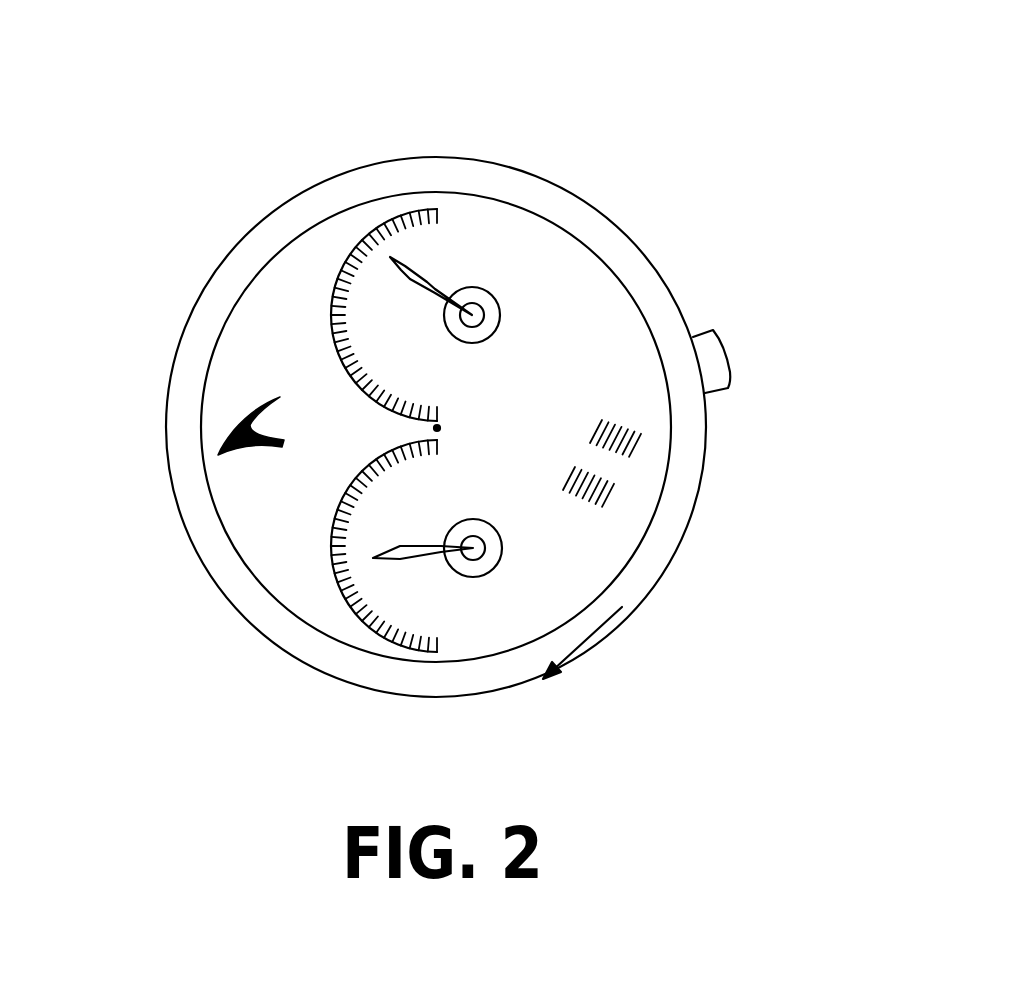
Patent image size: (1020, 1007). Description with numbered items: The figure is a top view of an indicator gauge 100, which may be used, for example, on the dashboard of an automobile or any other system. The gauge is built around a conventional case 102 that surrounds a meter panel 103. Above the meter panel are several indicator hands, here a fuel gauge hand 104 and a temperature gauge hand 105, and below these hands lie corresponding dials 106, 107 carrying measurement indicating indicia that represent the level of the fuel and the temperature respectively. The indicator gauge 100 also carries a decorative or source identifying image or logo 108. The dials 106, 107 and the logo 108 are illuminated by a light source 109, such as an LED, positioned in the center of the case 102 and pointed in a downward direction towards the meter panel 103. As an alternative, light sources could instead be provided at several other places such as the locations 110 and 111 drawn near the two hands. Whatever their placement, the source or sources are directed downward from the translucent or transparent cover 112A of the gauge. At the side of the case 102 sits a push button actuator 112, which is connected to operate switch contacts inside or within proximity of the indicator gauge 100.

The indicator gauge 100 is at (632, 135).
The case 102 is at (433, 172).
The meter panel 103 is at (607, 498).
The fuel gauge hand 104 is at (427, 275).
The temperature gauge hand 105 is at (418, 552).
The dial 106 is at (372, 223).
The dial 107 is at (372, 637).
The logo 108 is at (240, 420).
The light source 109 is at (437, 428).
The location 110 is at (500, 297).
The location 111 is at (497, 560).
The push button actuator 112 is at (718, 358).
The cover 112A is at (637, 450).